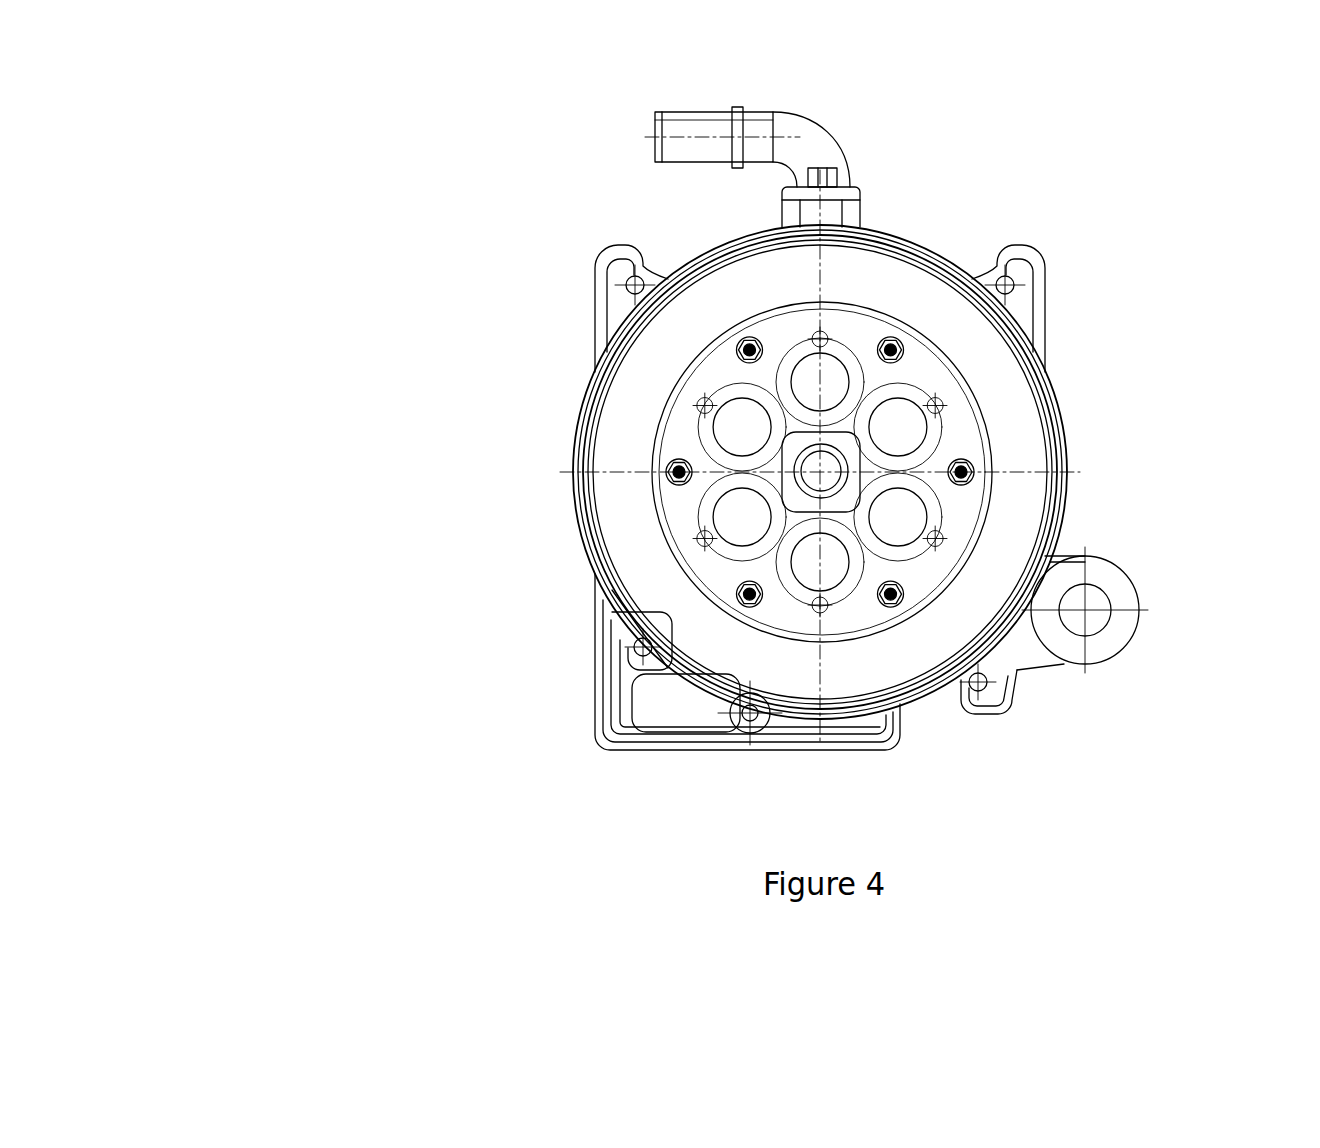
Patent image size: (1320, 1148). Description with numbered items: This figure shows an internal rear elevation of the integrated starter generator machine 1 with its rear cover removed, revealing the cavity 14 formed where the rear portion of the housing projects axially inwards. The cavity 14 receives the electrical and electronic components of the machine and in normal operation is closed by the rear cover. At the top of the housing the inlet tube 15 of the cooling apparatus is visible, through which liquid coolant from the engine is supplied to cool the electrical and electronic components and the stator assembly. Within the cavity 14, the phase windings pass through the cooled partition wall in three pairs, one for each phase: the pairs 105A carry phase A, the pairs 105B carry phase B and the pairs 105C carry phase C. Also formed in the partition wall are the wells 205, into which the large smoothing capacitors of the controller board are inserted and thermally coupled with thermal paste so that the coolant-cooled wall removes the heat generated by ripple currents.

The integrated starter generator machine 1 is at (548, 631).
The cavity 14 is at (970, 429).
The inlet tube 15 is at (668, 118).
The pairs of phase A windings 105A is at (890, 595).
The pairs of phase B windings 105B is at (749, 594).
The pairs of phase C windings 105C is at (961, 472).
The wells 205 is at (817, 385).